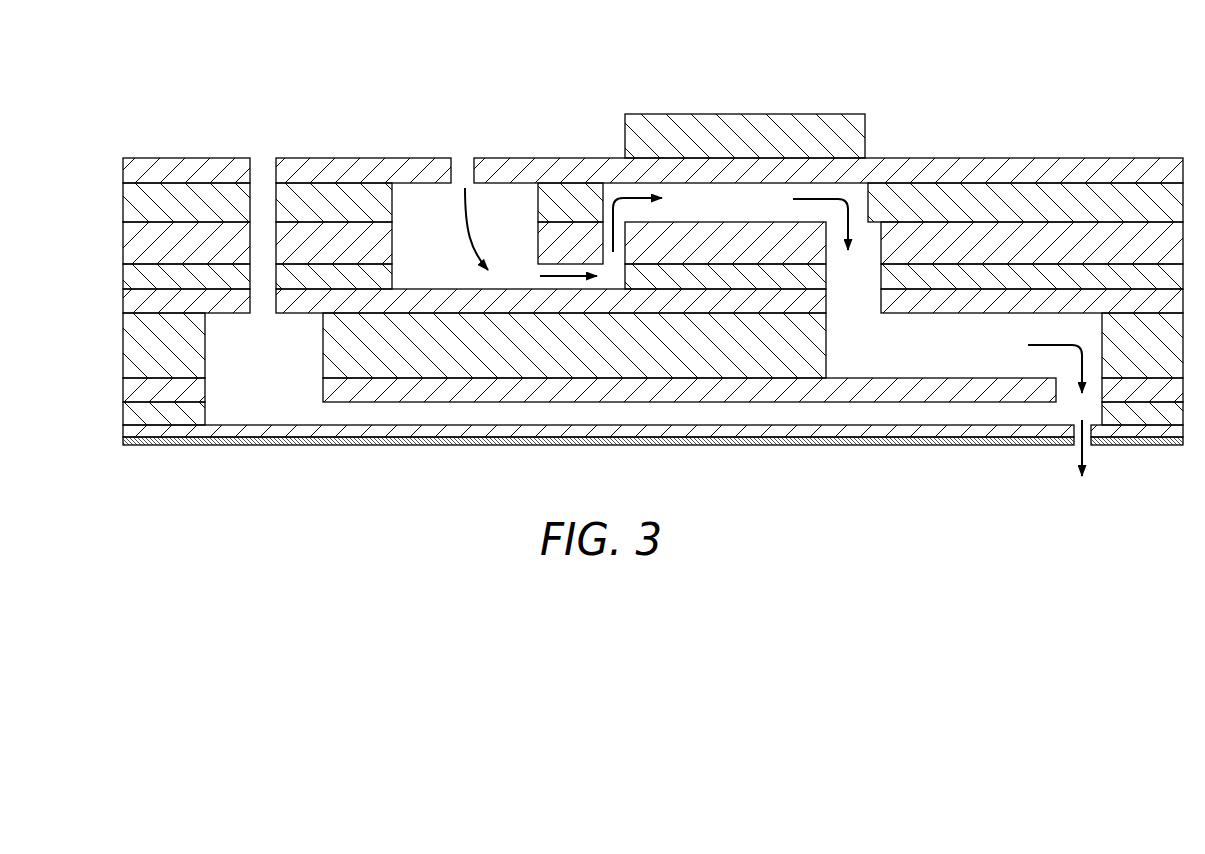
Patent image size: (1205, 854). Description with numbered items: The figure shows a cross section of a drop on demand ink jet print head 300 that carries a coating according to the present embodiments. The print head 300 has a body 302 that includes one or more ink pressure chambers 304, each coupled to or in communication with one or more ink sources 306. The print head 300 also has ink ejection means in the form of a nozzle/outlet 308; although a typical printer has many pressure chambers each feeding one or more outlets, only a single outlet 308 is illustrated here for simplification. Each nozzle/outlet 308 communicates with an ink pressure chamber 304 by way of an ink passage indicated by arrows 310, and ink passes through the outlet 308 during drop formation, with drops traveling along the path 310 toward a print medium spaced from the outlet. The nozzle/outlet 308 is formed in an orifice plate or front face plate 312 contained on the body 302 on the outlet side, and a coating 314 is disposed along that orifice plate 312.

The ink jet print head 300 is at (664, 274).
The body 302 is at (653, 474).
The ink pressure chamber 304 is at (717, 198).
The ink source 306 is at (466, 172).
The nozzle/outlet 308 is at (1078, 441).
The ink passage 310 is at (620, 192).
The orifice plate 312 is at (1158, 444).
The coating 314 is at (588, 447).